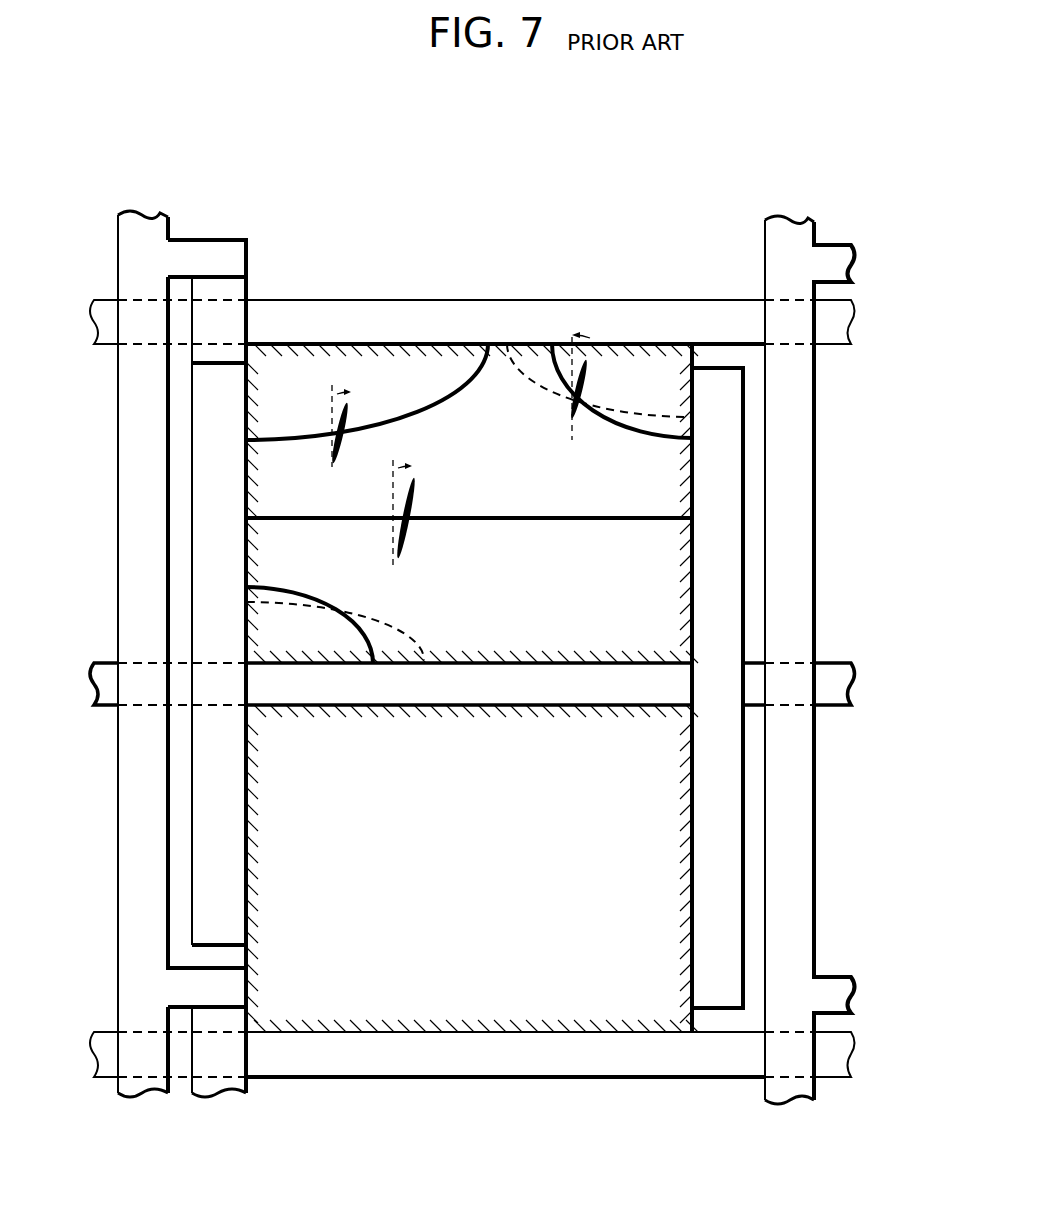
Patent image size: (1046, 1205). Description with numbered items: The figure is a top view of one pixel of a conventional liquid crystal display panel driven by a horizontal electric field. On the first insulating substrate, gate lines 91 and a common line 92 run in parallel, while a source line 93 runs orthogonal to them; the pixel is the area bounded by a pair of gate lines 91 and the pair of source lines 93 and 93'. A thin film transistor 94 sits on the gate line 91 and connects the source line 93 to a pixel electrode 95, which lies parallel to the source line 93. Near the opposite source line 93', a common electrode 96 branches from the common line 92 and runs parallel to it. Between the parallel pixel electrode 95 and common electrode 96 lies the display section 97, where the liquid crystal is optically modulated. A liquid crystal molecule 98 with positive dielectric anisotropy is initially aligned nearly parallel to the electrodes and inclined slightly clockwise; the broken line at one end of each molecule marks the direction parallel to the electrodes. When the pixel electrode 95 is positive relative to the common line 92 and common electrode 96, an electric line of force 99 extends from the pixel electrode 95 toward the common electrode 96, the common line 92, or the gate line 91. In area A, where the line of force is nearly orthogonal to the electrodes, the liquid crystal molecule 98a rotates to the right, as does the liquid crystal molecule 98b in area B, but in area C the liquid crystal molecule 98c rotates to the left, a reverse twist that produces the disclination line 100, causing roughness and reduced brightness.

The gate line 91 is at (568, 322).
The common line 92 is at (627, 688).
The source line 93 is at (143, 596).
The source line 93' is at (832, 642).
The thin film transistor 94 is at (232, 308).
The pixel electrode 95 is at (218, 398).
The common electrode 96 is at (717, 482).
The display section 97 is at (655, 617).
The liquid crystal molecule 98 is at (552, 188).
The liquid crystal molecule 98a is at (422, 496).
The liquid crystal molecule 98b is at (350, 404).
The liquid crystal molecule 98c is at (562, 373).
The electric line of force 99 is at (700, 392).
The disclination line 100 is at (618, 408).
The area A is at (498, 618).
The area B is at (282, 413).
The area C is at (655, 372).